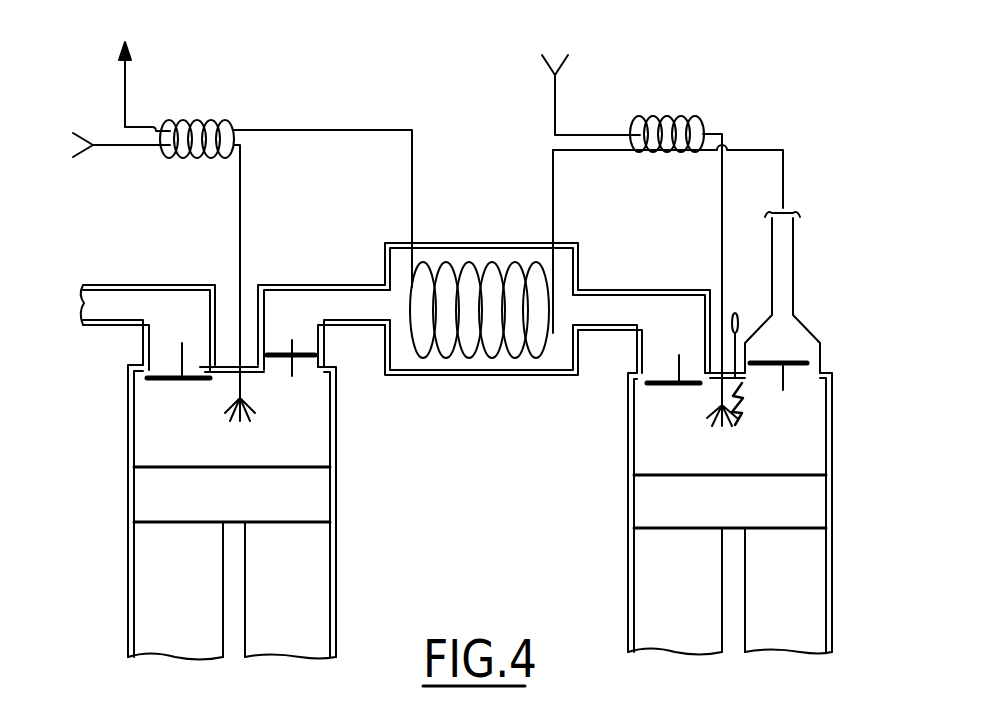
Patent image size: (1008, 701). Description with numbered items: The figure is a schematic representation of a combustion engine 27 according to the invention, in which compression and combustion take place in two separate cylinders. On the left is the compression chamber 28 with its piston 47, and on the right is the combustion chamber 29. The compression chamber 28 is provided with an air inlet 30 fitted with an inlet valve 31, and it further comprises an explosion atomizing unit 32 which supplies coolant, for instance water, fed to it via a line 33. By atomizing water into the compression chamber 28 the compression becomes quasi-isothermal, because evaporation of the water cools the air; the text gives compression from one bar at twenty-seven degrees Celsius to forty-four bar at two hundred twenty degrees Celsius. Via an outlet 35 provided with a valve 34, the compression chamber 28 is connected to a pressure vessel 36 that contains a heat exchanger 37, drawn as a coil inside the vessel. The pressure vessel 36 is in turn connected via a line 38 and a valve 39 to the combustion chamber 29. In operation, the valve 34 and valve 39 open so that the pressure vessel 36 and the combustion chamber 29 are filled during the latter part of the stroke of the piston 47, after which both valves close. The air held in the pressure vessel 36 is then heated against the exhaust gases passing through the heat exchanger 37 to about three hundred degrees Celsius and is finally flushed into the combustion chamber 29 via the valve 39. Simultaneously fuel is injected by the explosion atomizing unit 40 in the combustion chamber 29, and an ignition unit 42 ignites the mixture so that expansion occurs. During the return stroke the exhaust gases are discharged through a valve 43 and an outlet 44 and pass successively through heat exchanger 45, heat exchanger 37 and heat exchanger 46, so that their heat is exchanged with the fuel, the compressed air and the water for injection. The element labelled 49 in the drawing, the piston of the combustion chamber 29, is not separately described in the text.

The combustion engine 27 is at (812, 86).
The compression chamber 28 is at (338, 610).
The combustion chamber 29 is at (833, 622).
The air inlet 30 is at (157, 285).
The inlet valve 31 is at (189, 383).
The explosion atomizing unit 32 is at (243, 385).
The line 33 is at (240, 240).
The valve 34 is at (307, 308).
The outlet 35 is at (316, 286).
The pressure vessel 36 is at (498, 377).
The heat exchanger 37 is at (478, 260).
The line 38 is at (670, 290).
The valve 39 is at (668, 380).
The explosion atomizing unit 40 is at (718, 396).
The ignition unit 42 is at (760, 266).
The valve 43 is at (795, 358).
The outlet 44 is at (795, 268).
The heat exchanger 45 is at (696, 72).
The heat exchanger 46 is at (212, 118).
The piston 47 is at (308, 498).
The second piston 49 is at (798, 500).